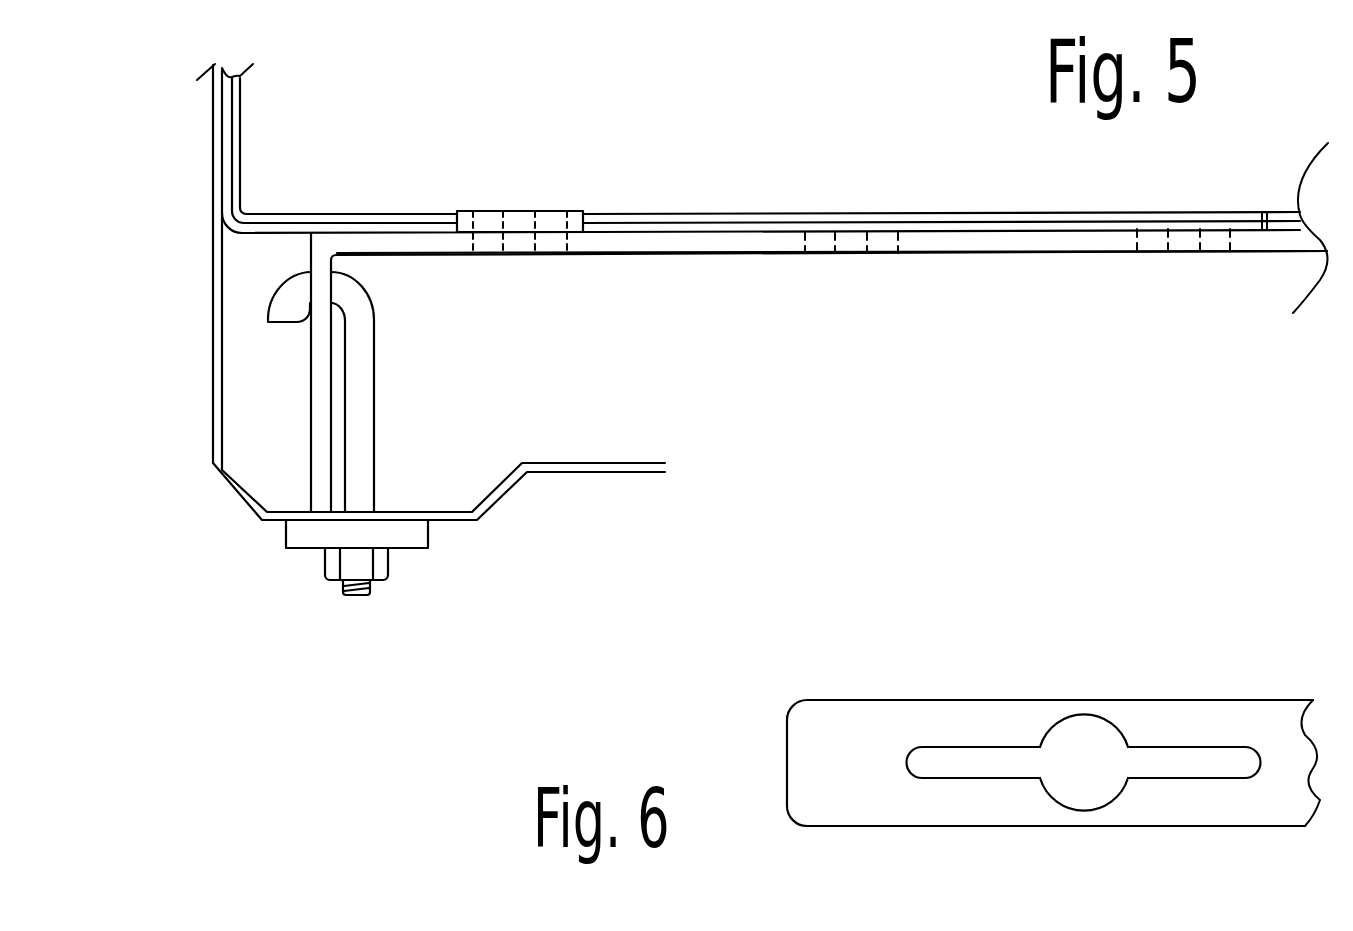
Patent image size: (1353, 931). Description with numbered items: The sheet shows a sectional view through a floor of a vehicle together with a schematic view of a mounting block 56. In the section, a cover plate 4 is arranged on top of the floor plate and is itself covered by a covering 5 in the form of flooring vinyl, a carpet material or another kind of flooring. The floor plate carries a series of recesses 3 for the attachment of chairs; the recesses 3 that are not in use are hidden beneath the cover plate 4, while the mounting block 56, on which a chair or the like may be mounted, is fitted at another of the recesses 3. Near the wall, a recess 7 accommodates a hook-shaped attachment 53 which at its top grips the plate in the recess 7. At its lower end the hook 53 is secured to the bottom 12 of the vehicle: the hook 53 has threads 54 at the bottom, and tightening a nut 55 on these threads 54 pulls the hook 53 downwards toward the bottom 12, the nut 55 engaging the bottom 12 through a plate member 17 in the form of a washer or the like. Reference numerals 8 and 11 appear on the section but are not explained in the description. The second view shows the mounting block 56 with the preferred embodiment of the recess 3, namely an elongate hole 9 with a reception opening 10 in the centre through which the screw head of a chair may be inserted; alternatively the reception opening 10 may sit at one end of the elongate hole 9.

In FIG. 5, the recess 3 is at (520, 262).
In FIG. 5, the cover plate 4 is at (1265, 213).
In FIG. 5, the covering 5 is at (1217, 210).
In FIG. 5, the recess 7 is at (369, 271).
In FIG. 5, the profile / mounting rail 8 is at (240, 140).
In FIG. 6, the elongate hole 9 is at (1187, 757).
In FIG. 6, the reception opening 10 is at (1078, 792).
In FIG. 5, the rail lower band 11 is at (1262, 245).
In FIG. 5, the bottom 12 is at (573, 472).
In FIG. 5, the plate member 17 is at (307, 540).
In FIG. 5, the hook-shaped attachment 53 is at (365, 440).
In FIG. 5, the threads 54 is at (357, 597).
In FIG. 5, the nut 55 is at (388, 568).
In FIG. 5, the mounting block 56 is at (570, 222).
In FIG. 6, the mounting block 56 is at (843, 727).